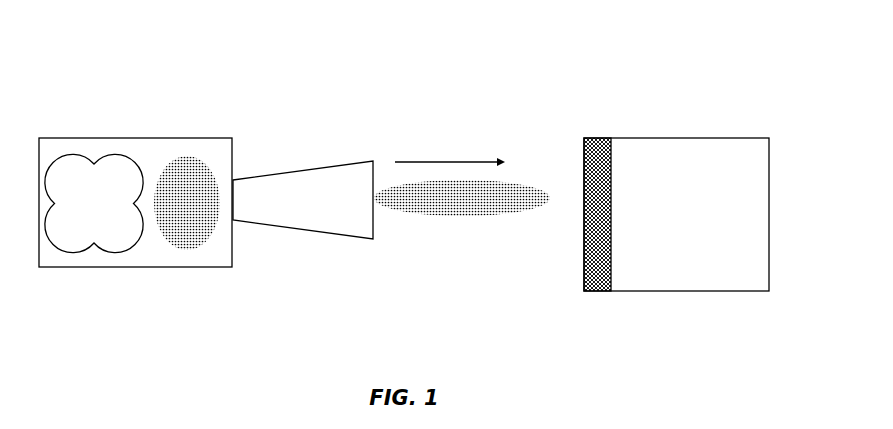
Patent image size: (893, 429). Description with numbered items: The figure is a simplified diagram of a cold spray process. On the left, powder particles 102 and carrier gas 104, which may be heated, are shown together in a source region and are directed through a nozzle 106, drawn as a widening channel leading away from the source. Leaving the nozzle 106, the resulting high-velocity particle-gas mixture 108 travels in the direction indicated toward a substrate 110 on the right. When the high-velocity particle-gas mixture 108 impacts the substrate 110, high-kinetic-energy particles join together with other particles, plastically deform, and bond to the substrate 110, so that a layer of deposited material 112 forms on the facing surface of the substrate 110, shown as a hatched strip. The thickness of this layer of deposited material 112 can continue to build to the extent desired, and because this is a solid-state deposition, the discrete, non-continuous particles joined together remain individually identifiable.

The powder particles 102 is at (203, 137).
The carrier gas 104 is at (93, 137).
The nozzle 106 is at (324, 233).
The high-velocity particle-gas mixture 108 is at (488, 248).
The substrate 110 is at (676, 214).
The layer of deposited material 112 is at (602, 138).